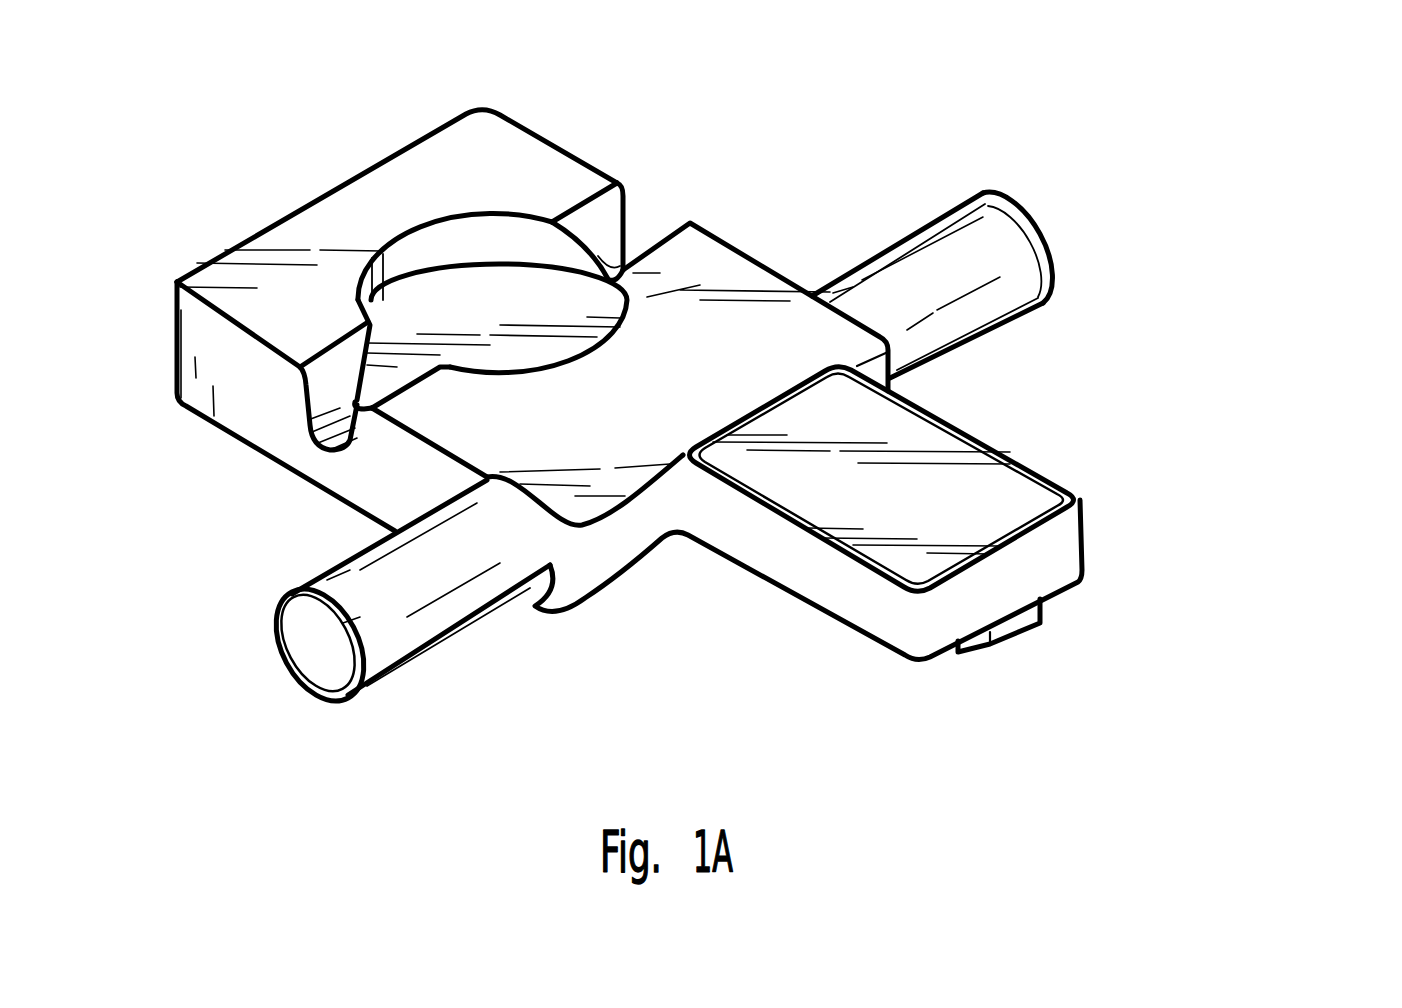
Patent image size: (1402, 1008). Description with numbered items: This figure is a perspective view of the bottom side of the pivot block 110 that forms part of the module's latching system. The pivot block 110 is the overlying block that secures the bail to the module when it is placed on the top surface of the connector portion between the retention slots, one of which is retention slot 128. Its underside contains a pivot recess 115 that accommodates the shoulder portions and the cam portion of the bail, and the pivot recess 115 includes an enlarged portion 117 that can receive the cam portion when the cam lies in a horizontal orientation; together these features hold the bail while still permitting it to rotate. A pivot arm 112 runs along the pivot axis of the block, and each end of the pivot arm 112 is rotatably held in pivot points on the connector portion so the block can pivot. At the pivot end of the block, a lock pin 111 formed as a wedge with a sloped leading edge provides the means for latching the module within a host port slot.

The pivot block 110 is at (1097, 383).
The lock pin 111 is at (1017, 638).
The pivot arm 112 is at (1012, 237).
The pivot recess 115 is at (352, 402).
The enlarged portion 117 is at (503, 300).
The retention slot 128 is at (710, 340).